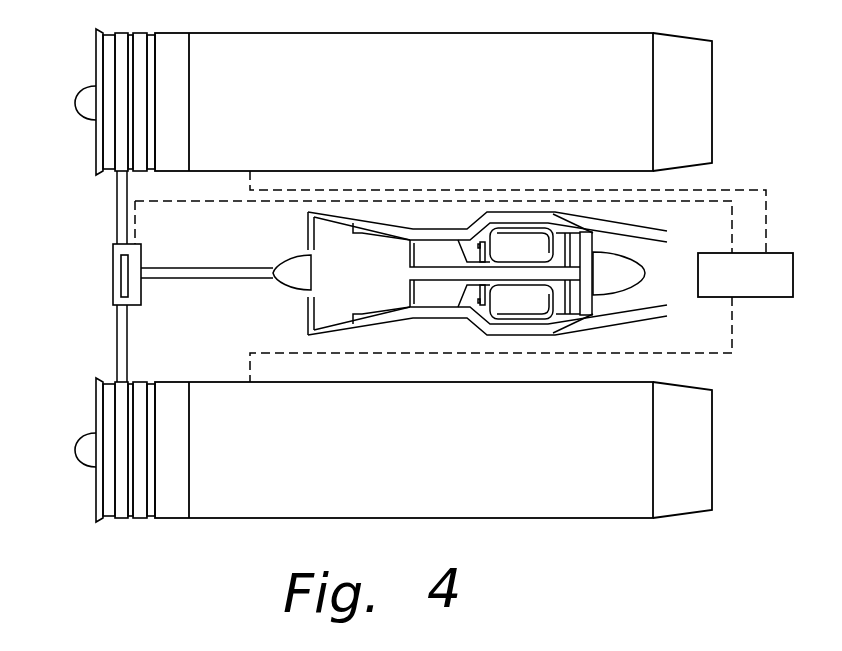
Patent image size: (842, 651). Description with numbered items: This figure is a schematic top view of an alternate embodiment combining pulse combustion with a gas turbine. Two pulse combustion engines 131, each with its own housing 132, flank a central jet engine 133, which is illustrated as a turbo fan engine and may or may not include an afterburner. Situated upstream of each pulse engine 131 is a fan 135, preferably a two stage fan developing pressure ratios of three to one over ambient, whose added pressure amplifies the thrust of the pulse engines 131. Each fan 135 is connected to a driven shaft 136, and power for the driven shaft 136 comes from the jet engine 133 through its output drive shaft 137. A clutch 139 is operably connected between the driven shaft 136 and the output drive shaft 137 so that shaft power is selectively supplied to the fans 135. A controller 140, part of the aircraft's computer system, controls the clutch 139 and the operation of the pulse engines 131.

The pulse combustion engine 131 is at (442, 33).
The housing 132 is at (238, 33).
The jet engine 133 is at (636, 323).
The fan 135 is at (96, 43).
The driven shaft 136 is at (117, 209).
The output drive shaft 137 is at (181, 280).
The clutch 139 is at (135, 307).
The controller 140 is at (762, 298).